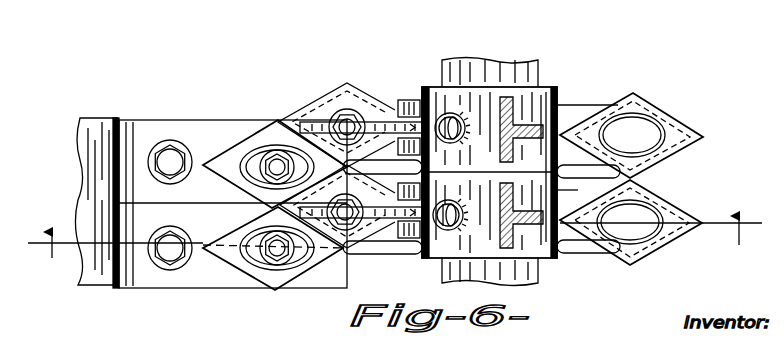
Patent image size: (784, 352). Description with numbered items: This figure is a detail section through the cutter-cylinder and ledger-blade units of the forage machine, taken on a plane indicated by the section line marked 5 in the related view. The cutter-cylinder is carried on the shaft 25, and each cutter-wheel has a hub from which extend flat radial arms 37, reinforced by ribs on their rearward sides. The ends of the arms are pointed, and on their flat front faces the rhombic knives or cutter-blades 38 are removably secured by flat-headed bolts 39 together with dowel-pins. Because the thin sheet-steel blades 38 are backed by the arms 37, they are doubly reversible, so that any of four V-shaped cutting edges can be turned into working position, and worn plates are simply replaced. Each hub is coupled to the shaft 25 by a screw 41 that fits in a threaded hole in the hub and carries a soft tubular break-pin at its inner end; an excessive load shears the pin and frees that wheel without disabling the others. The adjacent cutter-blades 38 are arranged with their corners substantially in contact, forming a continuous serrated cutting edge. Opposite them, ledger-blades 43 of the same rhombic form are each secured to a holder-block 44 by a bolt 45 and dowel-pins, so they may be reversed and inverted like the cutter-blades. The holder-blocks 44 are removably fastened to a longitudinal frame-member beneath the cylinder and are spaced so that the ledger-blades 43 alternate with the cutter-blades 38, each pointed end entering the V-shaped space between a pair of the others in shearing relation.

The shaft 25 is at (502, 76).
The flat radial arms 37 is at (326, 108).
The rhombic knives or cutter-blades 38 is at (302, 115).
The flat-headed bolts 39 is at (350, 112).
The screw 41 is at (418, 99).
The ledger-blades 43 is at (235, 152).
The holder-block 44 is at (165, 125).
The bolt 45 is at (272, 160).
The section line 5- 5 is at (395, 242).